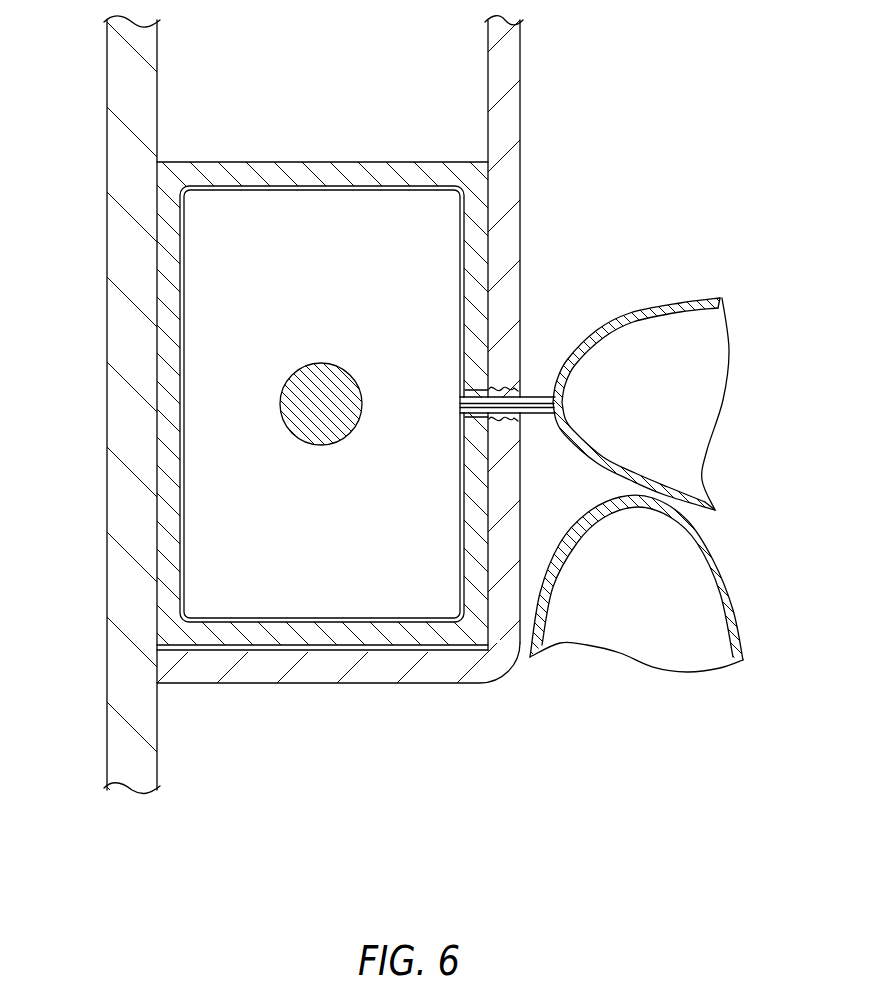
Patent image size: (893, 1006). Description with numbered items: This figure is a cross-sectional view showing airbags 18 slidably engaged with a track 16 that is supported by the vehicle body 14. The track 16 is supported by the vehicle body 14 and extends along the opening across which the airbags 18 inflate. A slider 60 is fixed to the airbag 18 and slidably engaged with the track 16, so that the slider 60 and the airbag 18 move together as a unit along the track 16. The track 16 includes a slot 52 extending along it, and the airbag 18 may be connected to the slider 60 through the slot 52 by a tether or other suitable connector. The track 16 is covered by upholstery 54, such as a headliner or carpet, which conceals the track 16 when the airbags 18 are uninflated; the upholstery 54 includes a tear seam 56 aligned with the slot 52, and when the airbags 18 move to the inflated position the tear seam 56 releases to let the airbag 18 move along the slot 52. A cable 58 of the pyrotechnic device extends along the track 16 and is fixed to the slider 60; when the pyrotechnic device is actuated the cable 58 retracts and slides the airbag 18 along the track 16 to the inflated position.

The vehicle body 14 is at (108, 233).
The track 16 is at (347, 162).
The airbag 18 is at (658, 352).
The slot 52 is at (460, 402).
The upholstery 54 is at (520, 113).
The tear seam 56 is at (522, 391).
The cable 58 is at (318, 382).
The slider 60 is at (255, 207).